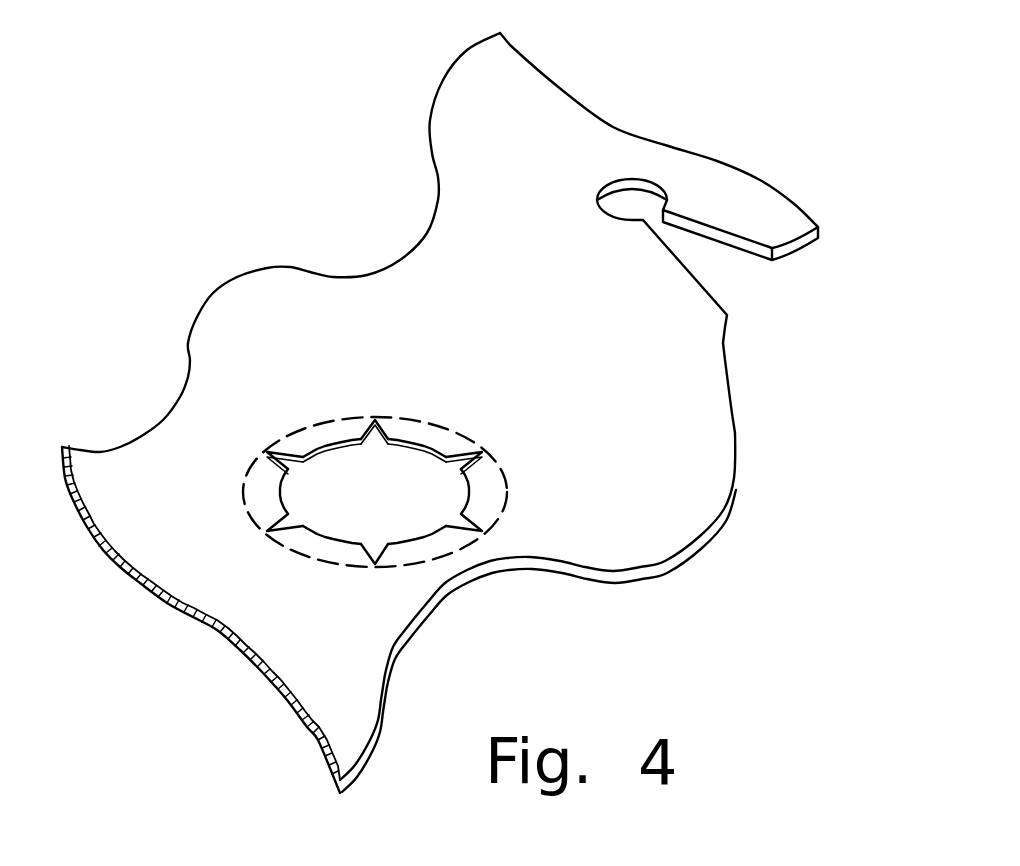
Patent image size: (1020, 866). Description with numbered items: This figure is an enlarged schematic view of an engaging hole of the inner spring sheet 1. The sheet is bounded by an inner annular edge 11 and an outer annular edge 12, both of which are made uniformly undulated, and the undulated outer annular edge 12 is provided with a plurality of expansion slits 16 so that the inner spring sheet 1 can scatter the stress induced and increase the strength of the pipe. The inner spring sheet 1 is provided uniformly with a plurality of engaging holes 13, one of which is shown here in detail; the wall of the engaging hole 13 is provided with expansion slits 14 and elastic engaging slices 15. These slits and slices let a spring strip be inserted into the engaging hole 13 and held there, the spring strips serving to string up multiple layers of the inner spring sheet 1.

The inner spring sheet 1 is at (480, 413).
The inner annular edge 11 is at (428, 158).
The outer annular edge 12 is at (682, 552).
The engaging hole 13 is at (343, 475).
The expansion slit 14 is at (460, 548).
The elastic engaging slice 15 is at (418, 427).
The expansion slit 16 is at (712, 258).